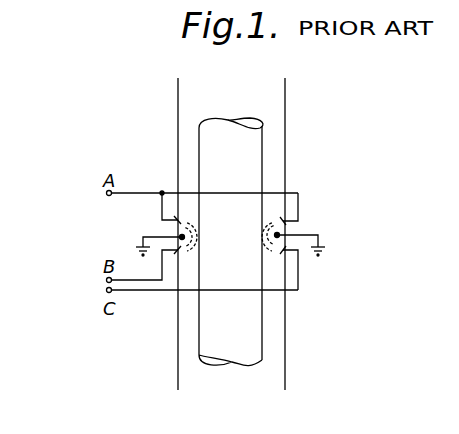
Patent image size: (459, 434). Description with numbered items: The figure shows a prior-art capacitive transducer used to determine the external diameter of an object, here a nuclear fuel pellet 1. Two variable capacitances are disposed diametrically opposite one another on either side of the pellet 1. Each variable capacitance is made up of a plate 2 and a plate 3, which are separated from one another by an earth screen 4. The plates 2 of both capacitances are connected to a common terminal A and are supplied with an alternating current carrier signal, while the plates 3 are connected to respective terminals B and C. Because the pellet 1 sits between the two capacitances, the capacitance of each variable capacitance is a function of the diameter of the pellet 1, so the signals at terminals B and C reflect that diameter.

The nuclear fuel pellet 1 is at (248, 161).
The plate 2 is at (285, 219).
The plate 3 is at (314, 268).
The earth screen 4 is at (310, 236).